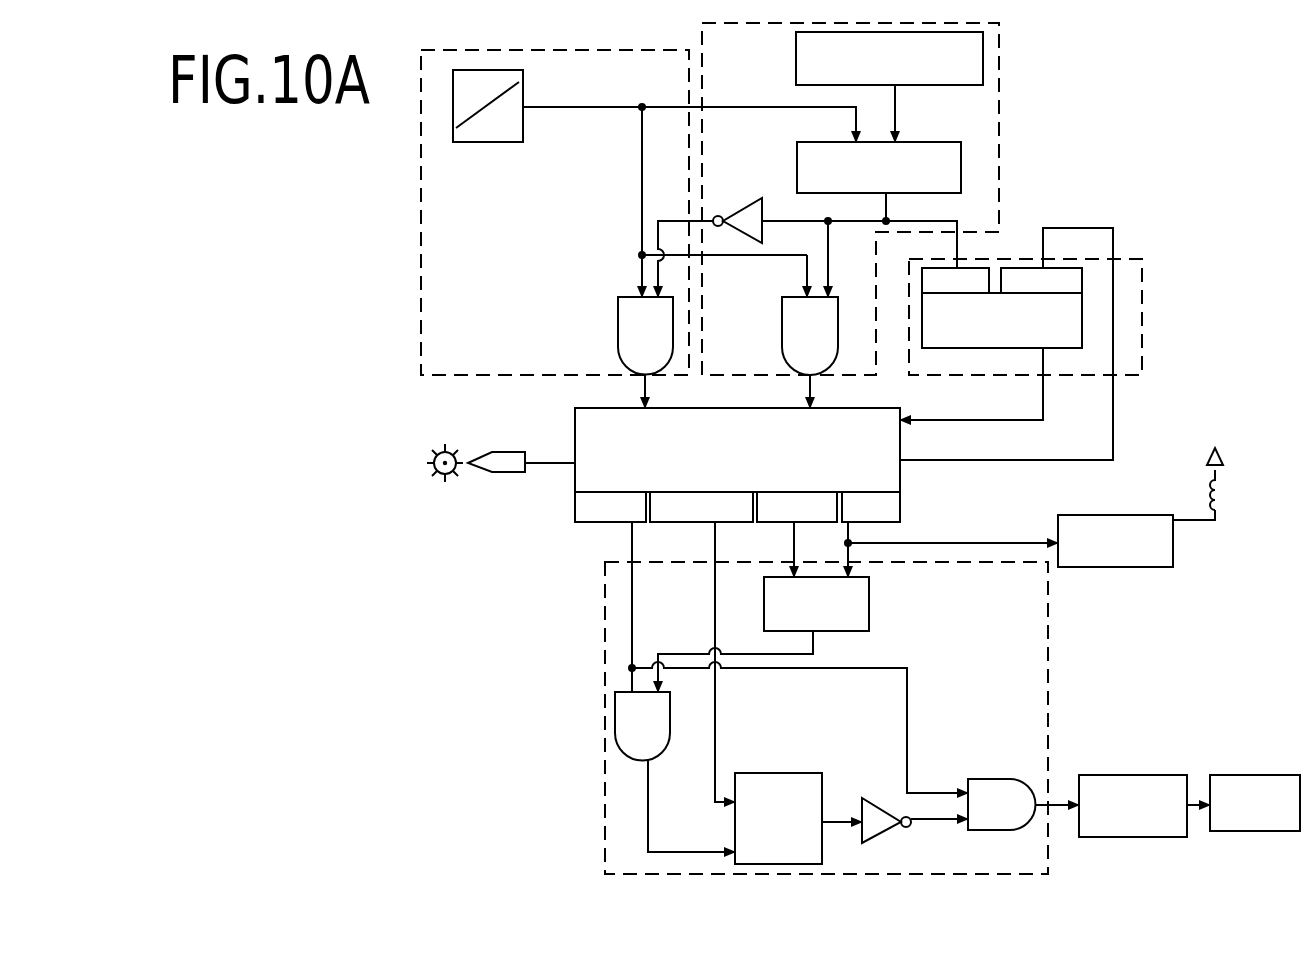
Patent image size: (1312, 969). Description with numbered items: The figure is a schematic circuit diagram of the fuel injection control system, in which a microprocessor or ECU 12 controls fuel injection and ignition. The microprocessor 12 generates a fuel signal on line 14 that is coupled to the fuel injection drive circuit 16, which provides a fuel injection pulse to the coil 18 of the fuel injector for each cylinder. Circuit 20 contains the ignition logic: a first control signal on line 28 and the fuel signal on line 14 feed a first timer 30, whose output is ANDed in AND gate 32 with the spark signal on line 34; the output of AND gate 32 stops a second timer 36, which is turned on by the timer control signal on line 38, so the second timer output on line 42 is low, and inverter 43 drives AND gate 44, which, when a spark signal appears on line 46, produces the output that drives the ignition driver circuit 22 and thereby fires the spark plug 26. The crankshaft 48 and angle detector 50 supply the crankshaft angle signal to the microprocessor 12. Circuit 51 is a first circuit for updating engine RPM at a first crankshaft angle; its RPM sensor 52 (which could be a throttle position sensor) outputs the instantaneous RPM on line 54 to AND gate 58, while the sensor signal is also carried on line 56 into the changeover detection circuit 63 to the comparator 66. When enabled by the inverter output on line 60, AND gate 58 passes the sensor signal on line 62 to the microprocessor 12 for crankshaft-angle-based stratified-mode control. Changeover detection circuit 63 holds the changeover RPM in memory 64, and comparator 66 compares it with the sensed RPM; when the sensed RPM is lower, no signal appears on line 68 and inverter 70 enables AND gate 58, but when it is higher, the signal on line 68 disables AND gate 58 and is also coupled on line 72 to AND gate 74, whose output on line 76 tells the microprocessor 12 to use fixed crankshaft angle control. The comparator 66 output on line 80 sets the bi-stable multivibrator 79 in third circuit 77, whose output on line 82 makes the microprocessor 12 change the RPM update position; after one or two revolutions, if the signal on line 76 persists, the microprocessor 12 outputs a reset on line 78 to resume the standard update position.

The microprocessor 12 is at (575, 410).
The line 14 is at (858, 533).
The fuel injection drive circuit 16 is at (1120, 515).
The coil 18 is at (1222, 485).
The circuit 20 is at (1050, 650).
The ignition driver circuit 22 is at (1117, 775).
The spark plug 26 is at (1262, 775).
The line 28 is at (796, 558).
The first timer 30 is at (869, 600).
The AND gate 32 is at (670, 718).
The line 34 is at (632, 620).
The second timer 36 is at (790, 773).
The line 38 is at (715, 695).
The line 42 is at (830, 812).
The inverter 43 is at (892, 838).
The AND gate 44 is at (985, 832).
The line 46 is at (907, 712).
The crankshaft 48 is at (440, 478).
The angle detector 50 is at (505, 472).
The first circuit 51 is at (592, 48).
The RPM sensor 52 is at (484, 142).
The line 54 is at (594, 107).
The comparator input line 56 is at (752, 107).
The AND gate 58 is at (618, 330).
The line 60 is at (652, 280).
The line 62 is at (645, 392).
The changeover detection circuit 63 is at (1010, 22).
The memory 64 is at (935, 85).
The comparator 66 is at (961, 165).
The line 68 is at (886, 209).
The inverter 70 is at (762, 235).
The line 72 is at (830, 255).
The AND gate 74 is at (782, 330).
The line 76 is at (810, 392).
The third circuit 77 is at (1142, 305).
The line 78 is at (1066, 228).
The bi-stable multivibrator 79 is at (960, 348).
The line 80 is at (957, 240).
The line 82 is at (948, 420).